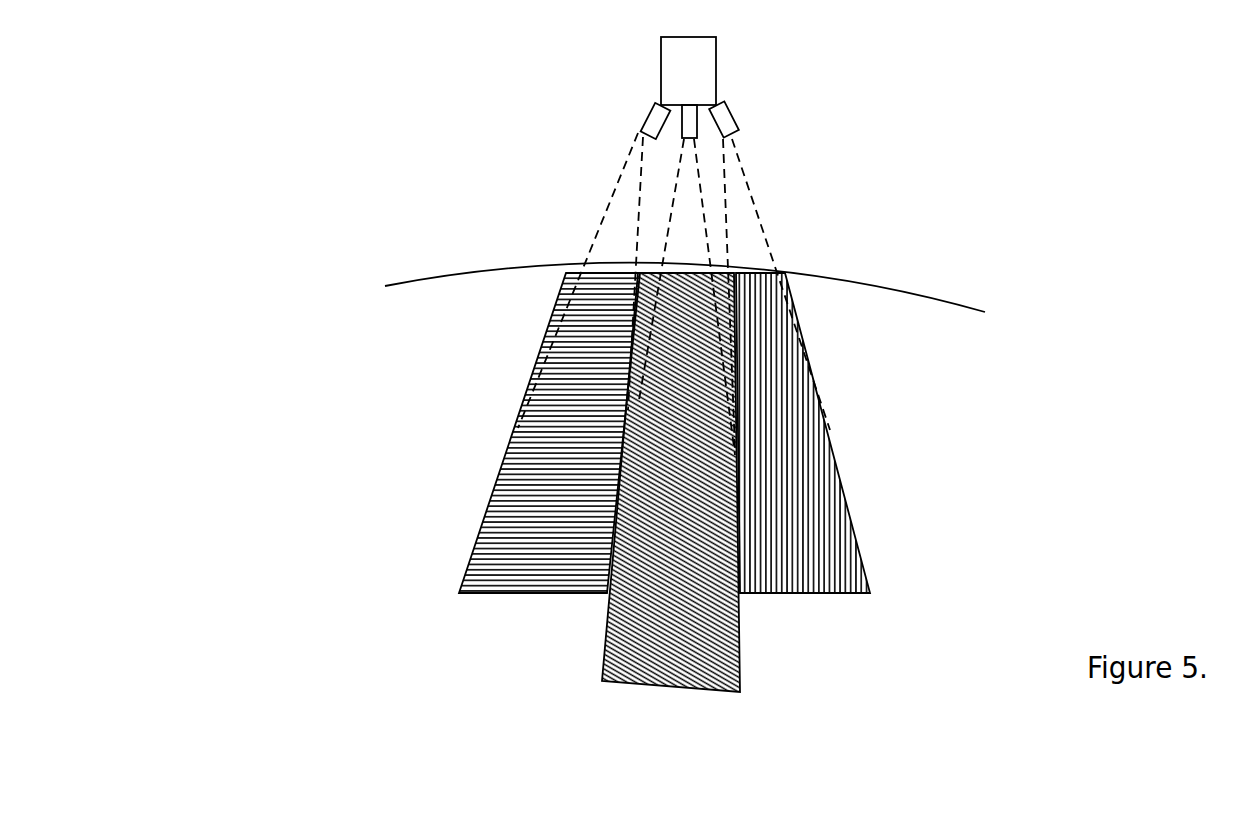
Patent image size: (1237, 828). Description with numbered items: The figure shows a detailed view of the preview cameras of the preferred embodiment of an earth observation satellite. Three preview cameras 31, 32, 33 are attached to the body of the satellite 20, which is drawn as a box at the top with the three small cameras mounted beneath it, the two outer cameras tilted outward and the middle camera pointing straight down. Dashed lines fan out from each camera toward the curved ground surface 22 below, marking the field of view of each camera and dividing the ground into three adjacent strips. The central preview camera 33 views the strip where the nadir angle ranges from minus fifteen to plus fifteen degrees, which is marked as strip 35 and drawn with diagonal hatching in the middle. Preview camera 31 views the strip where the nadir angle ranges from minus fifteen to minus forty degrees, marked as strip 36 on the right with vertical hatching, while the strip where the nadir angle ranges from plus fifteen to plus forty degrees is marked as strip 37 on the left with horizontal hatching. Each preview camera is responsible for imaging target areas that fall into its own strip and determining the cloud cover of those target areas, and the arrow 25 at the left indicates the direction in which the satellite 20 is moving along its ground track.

The satellite 20 is at (718, 70).
The object surface 22 is at (852, 260).
The direction of movement 25 is at (213, 548).
The preview camera 31 is at (742, 112).
The preview camera 32 is at (647, 115).
The preview camera 33 is at (674, 140).
The strip 35 is at (742, 665).
The strip 36 is at (832, 428).
The strip 37 is at (480, 462).